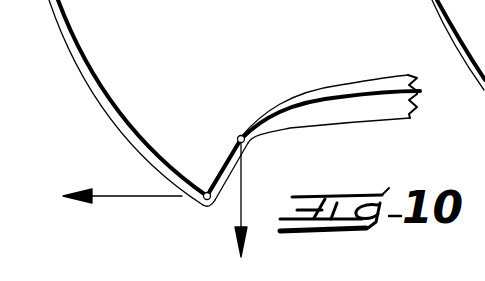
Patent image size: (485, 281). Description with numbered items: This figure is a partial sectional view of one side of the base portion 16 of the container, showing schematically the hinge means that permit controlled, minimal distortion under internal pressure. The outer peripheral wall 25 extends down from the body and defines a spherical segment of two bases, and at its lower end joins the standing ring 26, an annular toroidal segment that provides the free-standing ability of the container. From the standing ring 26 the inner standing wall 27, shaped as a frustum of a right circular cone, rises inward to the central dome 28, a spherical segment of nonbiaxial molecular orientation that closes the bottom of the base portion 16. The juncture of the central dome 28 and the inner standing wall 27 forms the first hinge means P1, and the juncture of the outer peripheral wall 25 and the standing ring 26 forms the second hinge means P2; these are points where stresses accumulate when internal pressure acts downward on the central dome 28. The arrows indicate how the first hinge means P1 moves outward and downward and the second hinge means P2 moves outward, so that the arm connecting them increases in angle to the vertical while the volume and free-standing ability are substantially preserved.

The base portion 16 is at (113, 57).
The outer peripheral wall 25 is at (72, 52).
The standing ring 26 is at (213, 208).
The inner standing wall 27 is at (229, 175).
The central dome 28 is at (347, 112).
The first hinge means P1 is at (240, 135).
The second hinge means P2 is at (207, 192).